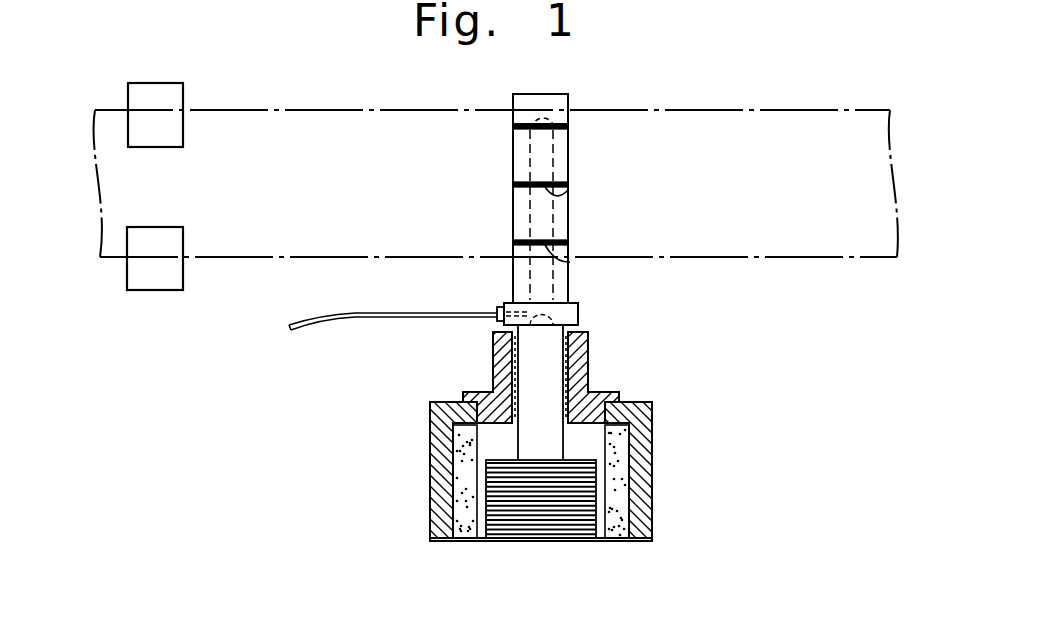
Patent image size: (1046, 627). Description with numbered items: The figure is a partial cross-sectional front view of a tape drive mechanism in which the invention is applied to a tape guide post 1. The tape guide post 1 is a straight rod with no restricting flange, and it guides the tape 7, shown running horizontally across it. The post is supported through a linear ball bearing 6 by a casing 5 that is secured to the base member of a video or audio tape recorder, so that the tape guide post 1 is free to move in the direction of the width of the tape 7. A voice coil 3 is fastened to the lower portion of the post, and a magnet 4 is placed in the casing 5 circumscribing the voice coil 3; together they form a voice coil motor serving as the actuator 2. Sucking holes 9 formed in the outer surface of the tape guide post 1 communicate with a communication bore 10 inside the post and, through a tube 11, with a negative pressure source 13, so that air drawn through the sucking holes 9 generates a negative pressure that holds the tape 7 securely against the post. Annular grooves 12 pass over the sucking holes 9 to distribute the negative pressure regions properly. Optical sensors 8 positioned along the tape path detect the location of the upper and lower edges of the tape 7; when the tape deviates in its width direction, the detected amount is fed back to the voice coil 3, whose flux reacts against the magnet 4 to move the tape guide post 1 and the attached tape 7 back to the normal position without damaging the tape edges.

The tape guide post 1 is at (512, 97).
The actuator 2 is at (408, 496).
The voice coil 3 is at (512, 534).
The magnet 4 is at (615, 538).
The casing 5 is at (650, 435).
The linear ball bearing 6 is at (575, 354).
The tape 7 is at (764, 243).
The optical sensors 8 is at (173, 102).
The sucking holes 9 is at (545, 118).
The communication bore 10 is at (551, 215).
The tube 11 is at (350, 320).
The annular grooves 12 is at (513, 127).
The negative pressure source 13 is at (277, 334).